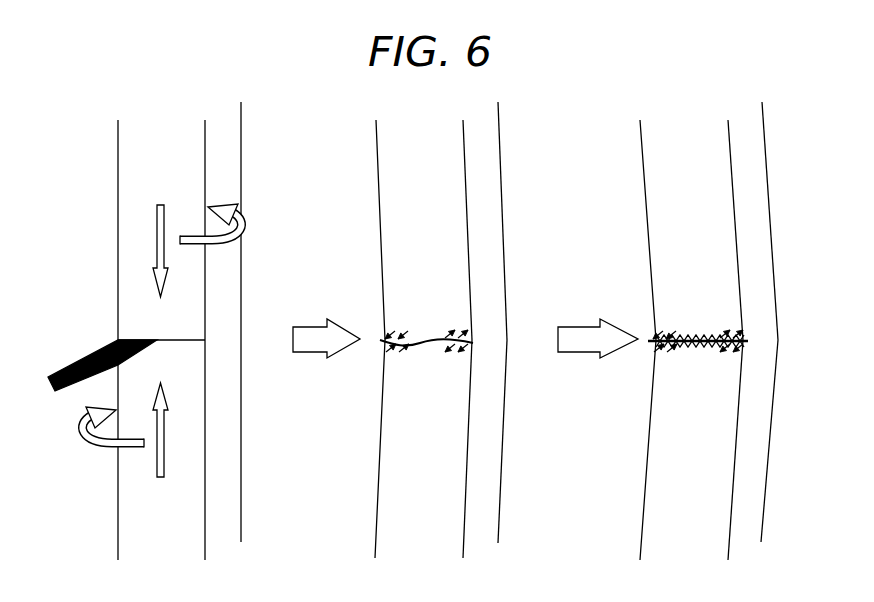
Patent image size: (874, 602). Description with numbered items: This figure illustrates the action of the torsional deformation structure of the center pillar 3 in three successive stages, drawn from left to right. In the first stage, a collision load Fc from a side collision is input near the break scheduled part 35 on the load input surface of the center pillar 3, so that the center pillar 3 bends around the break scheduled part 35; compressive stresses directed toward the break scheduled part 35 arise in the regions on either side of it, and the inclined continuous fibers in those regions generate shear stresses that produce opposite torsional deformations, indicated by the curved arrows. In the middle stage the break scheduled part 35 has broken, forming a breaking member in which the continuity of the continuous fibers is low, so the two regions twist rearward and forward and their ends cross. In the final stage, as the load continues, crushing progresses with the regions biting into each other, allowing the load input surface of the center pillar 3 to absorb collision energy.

The center pillar 3 is at (115, 237).
The break scheduled part 35 is at (181, 338).
The collision load Fc is at (80, 362).